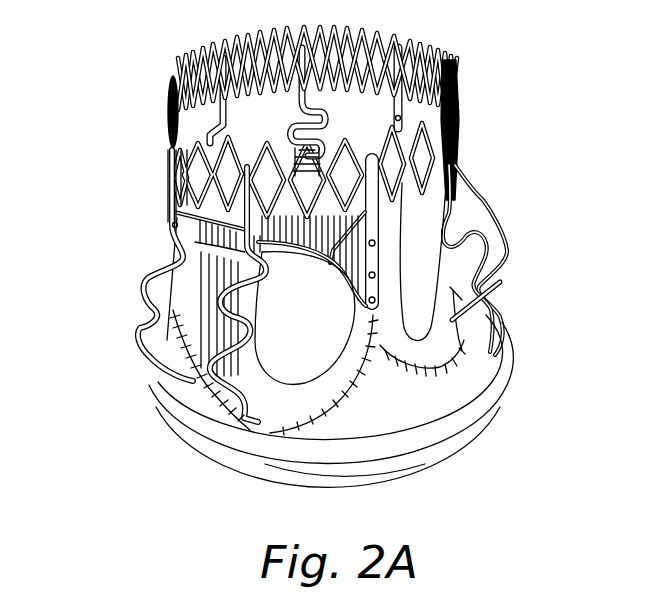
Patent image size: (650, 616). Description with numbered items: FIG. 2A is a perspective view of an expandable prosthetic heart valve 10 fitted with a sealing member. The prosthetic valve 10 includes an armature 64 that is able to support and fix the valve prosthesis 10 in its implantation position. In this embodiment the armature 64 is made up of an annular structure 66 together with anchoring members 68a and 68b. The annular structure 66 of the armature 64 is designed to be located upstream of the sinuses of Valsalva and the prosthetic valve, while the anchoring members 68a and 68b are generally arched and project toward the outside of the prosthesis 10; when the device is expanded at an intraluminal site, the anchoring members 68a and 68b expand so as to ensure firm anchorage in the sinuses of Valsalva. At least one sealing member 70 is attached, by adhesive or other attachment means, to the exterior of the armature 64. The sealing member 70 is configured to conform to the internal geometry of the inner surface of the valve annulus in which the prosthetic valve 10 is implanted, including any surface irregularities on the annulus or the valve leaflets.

The expandable prosthetic heart valve 10 is at (513, 83).
The armature 64 is at (127, 237).
The annular structure 66 is at (437, 53).
The anchoring member 68a is at (248, 372).
The anchoring member 68b is at (465, 206).
The sealing member 70 is at (507, 352).